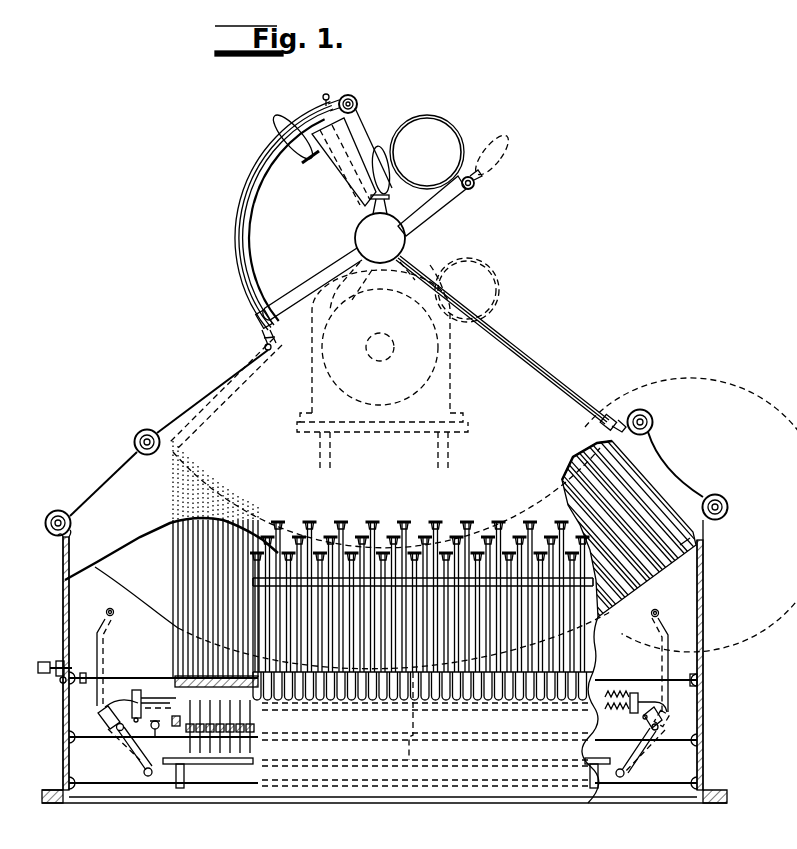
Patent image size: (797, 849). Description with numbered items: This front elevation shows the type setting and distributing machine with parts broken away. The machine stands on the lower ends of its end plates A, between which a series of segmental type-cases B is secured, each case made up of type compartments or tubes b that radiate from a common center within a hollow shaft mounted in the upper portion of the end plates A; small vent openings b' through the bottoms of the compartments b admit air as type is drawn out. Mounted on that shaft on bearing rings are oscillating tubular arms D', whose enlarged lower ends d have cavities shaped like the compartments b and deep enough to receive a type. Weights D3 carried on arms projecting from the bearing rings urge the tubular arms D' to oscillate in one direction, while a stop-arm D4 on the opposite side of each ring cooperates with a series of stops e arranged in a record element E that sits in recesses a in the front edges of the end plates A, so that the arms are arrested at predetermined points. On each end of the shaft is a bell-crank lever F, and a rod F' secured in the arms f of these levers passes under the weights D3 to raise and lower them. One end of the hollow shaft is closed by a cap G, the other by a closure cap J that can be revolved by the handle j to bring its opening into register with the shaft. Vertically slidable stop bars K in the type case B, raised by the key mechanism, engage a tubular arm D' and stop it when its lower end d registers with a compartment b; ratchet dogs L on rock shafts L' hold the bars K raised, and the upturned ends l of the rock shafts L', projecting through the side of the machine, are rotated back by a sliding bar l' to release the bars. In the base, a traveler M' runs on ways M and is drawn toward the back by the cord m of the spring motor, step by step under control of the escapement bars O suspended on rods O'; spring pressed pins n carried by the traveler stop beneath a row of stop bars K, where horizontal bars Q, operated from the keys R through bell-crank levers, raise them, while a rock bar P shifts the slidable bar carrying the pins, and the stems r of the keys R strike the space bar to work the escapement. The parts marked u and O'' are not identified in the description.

The end plates A is at (401, 811).
The type-cases B is at (364, 622).
The record element E is at (236, 258).
The stops e is at (266, 318).
The recesses a is at (358, 108).
The bell-crank lever F is at (330, 157).
The rod F' is at (488, 163).
The arms of bell-crank levers f is at (432, 206).
The weights D3 is at (427, 152).
The stop-arm D4 is at (301, 295).
The oscillating tubular arms D' is at (502, 340).
The lower ends of tubular arms d is at (607, 419).
The handle j is at (381, 179).
The closure cap J is at (380, 238).
The pivot ear u is at (643, 410).
The type compartments b is at (620, 485).
The vent openings b' is at (688, 563).
The keys R is at (398, 522).
The key stems r is at (568, 650).
The stop bars K is at (175, 640).
The rods O' is at (385, 643).
The escapement bars O is at (383, 720).
The lever arm O'' is at (375, 752).
The upturned ends of rock shafts l is at (52, 648).
The sliding bar l' is at (43, 686).
The rock shaft L' is at (383, 665).
The ratchet dogs L is at (204, 667).
The ways M is at (375, 701).
The traveler M' is at (405, 700).
The cord m is at (640, 718).
The spring pressed pins n is at (173, 716).
The rock bar P is at (151, 726).
The vertically movable bars Q is at (262, 727).
The cap G is at (158, 735).